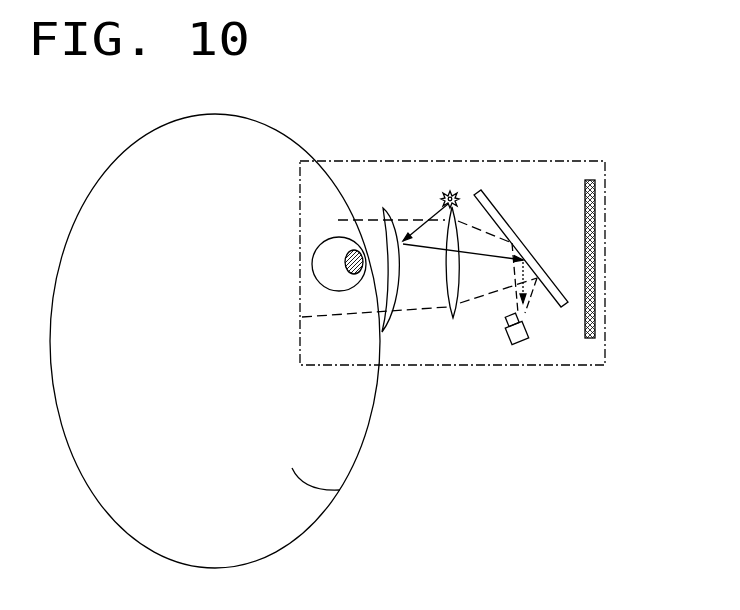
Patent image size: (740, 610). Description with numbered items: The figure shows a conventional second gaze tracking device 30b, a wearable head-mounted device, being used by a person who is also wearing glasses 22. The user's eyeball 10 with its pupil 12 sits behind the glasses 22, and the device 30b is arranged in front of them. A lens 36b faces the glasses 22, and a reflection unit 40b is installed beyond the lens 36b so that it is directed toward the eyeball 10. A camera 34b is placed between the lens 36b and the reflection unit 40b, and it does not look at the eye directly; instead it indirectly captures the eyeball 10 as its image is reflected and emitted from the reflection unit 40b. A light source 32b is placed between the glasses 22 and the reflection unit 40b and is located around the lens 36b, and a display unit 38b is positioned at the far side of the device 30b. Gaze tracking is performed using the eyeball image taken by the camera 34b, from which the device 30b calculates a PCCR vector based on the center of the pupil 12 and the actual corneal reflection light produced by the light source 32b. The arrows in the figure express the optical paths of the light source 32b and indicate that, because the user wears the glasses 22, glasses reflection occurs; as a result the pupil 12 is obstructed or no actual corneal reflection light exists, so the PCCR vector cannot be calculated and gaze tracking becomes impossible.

The eyeball 10 is at (313, 275).
The pupil 12 is at (345, 255).
The glasses 22 is at (397, 207).
The second gaze tracking device 30b is at (528, 161).
The light source 32b is at (450, 190).
The camera 34b is at (509, 344).
The lens 36b is at (455, 320).
The display unit 38b is at (595, 210).
The reflection unit 40b is at (505, 225).